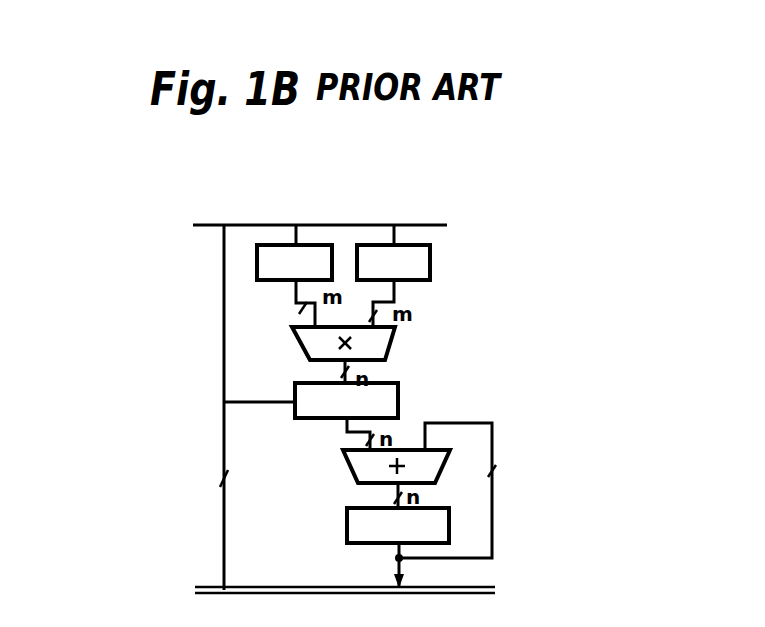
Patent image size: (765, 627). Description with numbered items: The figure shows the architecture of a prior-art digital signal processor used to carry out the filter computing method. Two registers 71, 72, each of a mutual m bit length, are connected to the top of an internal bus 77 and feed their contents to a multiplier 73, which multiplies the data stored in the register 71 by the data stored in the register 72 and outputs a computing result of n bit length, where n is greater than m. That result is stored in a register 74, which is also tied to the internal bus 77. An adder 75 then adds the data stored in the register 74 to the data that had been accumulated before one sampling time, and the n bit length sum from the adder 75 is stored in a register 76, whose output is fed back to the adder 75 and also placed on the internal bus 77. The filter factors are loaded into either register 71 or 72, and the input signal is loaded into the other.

The register 71 is at (270, 245).
The register 72 is at (430, 252).
The multiplier 73 is at (395, 336).
The register 74 is at (398, 397).
The adder 75 is at (351, 470).
The register 76 is at (449, 522).
The internal bus 77 is at (224, 318).